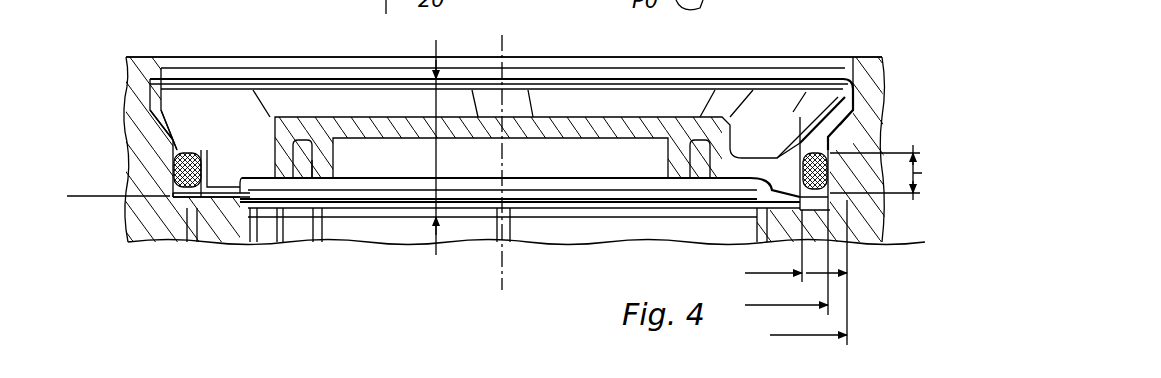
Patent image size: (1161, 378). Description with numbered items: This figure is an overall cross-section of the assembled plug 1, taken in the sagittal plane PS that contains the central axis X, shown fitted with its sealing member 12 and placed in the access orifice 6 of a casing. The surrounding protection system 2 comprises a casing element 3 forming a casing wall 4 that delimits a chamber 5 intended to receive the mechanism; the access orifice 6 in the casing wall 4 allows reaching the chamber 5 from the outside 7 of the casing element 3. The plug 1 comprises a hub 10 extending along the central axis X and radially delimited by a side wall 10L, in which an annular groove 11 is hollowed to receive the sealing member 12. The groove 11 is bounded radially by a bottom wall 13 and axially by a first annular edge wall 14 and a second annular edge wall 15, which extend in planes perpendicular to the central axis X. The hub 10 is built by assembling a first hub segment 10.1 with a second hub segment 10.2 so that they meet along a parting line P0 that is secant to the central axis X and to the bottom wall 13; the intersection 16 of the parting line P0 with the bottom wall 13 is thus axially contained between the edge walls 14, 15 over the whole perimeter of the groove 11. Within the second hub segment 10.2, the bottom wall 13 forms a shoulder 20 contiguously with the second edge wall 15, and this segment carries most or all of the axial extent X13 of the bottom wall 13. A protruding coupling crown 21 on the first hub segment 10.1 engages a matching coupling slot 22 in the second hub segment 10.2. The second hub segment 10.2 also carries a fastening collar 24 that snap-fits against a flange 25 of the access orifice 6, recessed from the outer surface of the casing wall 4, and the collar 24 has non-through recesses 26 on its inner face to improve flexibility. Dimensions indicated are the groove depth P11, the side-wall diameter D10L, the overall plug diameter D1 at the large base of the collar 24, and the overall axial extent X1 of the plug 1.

The plug 1 is at (676, 128).
The protection system 2 is at (882, 55).
The casing element 3 is at (872, 70).
The casing wall 4 is at (140, 112).
The chamber 5 is at (655, 235).
The access orifice 6 is at (815, 52).
The outside 7 is at (422, 45).
The hub 10 is at (270, 178).
The side wall 10L is at (173, 142).
The first hub segment 10.1 is at (790, 200).
The second hub segment 10.2 is at (812, 143).
The annular groove 11 is at (170, 189).
The sealing member 12 is at (172, 170).
The bottom wall 13 is at (208, 164).
The first annular edge wall 14 is at (187, 208).
The second annular edge wall 15 is at (186, 152).
The intersection 16 is at (200, 194).
The shoulder 20 is at (205, 150).
The coupling crown 21 is at (308, 160).
The coupling slot 22 is at (303, 140).
The fastening collar 24 is at (838, 104).
The flange 25 is at (843, 70).
The non-through recesses 26 is at (818, 108).
The parting line P0 is at (78, 201).
The sagittal plane PS is at (80, 0).
The central axis X is at (515, 156).
The overall axial extent X1 is at (440, 170).
The axial extent of the bottom wall X13 is at (899, 172).
The depth of the groove P11 is at (795, 272).
The overall diameter of the side wall D10L is at (785, 294).
The overall diameter of the plug D1 is at (808, 324).